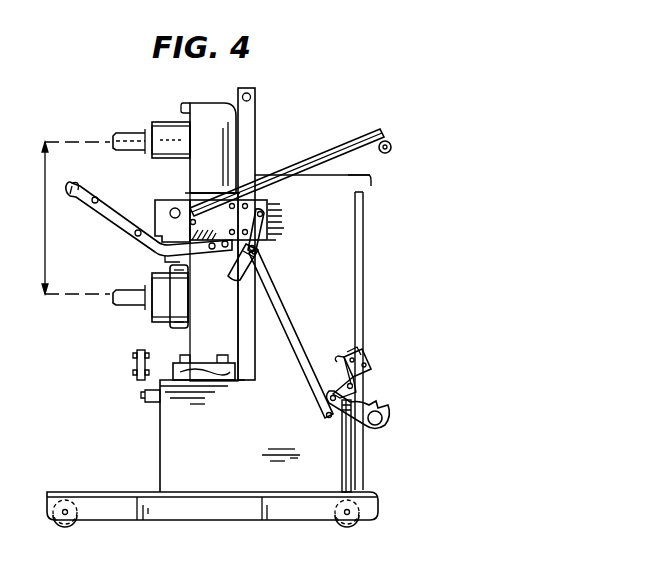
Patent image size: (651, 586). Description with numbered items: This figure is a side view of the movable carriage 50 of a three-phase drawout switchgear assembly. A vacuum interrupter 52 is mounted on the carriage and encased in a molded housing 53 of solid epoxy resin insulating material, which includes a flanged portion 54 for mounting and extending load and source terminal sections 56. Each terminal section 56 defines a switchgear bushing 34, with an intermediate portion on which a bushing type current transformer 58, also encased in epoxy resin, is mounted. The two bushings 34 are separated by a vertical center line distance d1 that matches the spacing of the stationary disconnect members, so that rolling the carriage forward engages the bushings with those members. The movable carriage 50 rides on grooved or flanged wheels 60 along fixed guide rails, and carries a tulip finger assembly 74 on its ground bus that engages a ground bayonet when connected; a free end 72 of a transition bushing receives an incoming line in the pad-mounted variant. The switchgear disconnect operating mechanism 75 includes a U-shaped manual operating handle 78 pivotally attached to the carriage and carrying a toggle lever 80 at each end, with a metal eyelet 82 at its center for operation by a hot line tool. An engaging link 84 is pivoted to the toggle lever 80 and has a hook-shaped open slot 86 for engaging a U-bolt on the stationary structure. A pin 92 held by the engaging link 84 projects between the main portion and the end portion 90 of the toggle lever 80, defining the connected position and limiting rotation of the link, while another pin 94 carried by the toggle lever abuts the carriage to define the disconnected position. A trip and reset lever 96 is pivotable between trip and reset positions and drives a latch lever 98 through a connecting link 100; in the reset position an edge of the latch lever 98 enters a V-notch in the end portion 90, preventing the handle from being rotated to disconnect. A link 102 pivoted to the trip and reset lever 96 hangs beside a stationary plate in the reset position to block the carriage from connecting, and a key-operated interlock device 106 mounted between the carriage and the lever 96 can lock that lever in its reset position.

The switchgear bushing 34 is at (130, 134).
The movable carriage 50 is at (158, 463).
The vacuum interrupter 52 is at (240, 134).
The molded housing 53 is at (212, 150).
The flanged portion 54 is at (205, 366).
The terminal section 56 is at (170, 122).
The bushing type current transformer 58 is at (168, 316).
The wheel 60 is at (55, 525).
The free end 72 is at (140, 402).
The tulip finger assembly 74 is at (130, 362).
The switchgear disconnect operating mechanism 75 is at (167, 200).
The manual operating handle 78 is at (306, 160).
The toggle lever 80 is at (205, 234).
The eyelet 82 is at (392, 146).
The engaging link 84 is at (78, 187).
The hook-shaped open slot 86 is at (74, 198).
The end portion 90 is at (228, 265).
The pin 92 is at (165, 258).
The pin 94 is at (203, 200).
The trip and reset lever 96 is at (388, 420).
The latch lever 98 is at (266, 243).
The connecting link 100 is at (292, 320).
The link 102 is at (341, 460).
The key-operated interlock device 106 is at (374, 360).
The vertical center line distance d1 is at (71, 218).